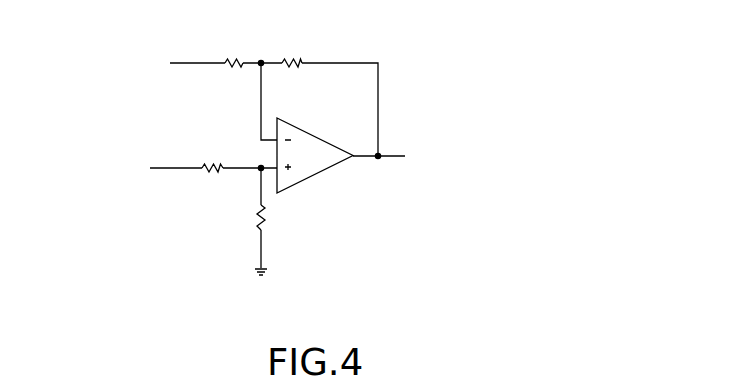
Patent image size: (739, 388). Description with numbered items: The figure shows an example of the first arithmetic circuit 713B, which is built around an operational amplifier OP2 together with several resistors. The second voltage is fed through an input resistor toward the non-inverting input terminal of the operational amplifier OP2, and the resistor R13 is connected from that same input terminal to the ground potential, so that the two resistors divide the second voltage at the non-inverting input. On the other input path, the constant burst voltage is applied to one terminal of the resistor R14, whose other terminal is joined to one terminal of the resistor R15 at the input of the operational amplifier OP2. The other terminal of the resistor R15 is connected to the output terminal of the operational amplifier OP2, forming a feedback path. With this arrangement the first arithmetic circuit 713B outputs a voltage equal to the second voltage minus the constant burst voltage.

The resistor R14 is at (235, 57).
The resistor R15 is at (293, 57).
The resistor R13 is at (272, 217).
The operational amplifier OP2 is at (311, 131).
The first arithmetic circuit 713B is at (298, 175).